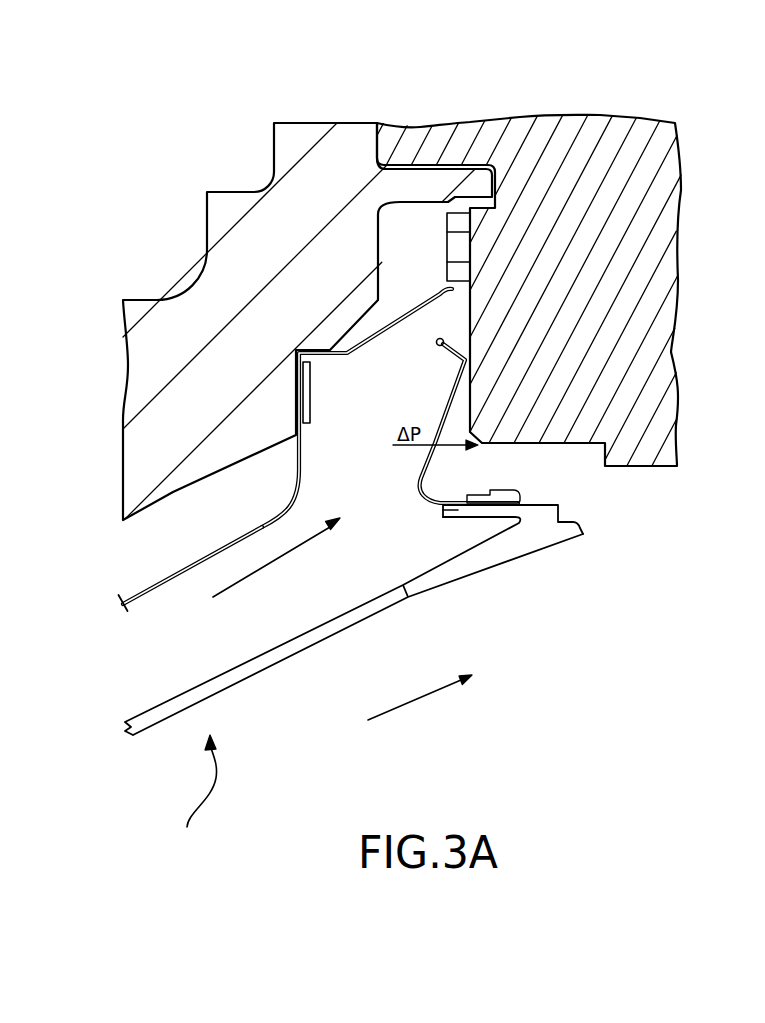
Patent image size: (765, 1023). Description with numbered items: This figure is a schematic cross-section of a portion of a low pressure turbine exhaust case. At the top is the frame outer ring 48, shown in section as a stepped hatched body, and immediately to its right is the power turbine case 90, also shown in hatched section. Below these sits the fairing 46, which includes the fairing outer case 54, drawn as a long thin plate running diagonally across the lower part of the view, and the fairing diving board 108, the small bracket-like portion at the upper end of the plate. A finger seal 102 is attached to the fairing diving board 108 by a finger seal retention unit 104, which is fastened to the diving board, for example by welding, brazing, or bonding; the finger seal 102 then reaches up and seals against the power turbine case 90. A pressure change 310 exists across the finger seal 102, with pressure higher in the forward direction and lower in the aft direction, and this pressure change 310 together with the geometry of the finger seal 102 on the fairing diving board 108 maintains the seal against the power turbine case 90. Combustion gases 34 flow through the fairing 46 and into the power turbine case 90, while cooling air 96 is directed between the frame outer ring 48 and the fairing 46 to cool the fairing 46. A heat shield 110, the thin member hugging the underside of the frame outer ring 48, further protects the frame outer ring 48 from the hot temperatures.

The frame outer ring 48 is at (313, 143).
The power turbine case 90 is at (591, 132).
The pressure change 310 is at (432, 450).
The heat shield 110 is at (138, 582).
The cooling air 96 is at (267, 567).
The fairing outer case 54 is at (252, 667).
The finger seal 102 is at (523, 499).
The finger seal retention unit 104 is at (478, 494).
The fairing diving board 108 is at (457, 509).
The combustion gases 34 is at (423, 698).
The fairing 46 is at (195, 796).